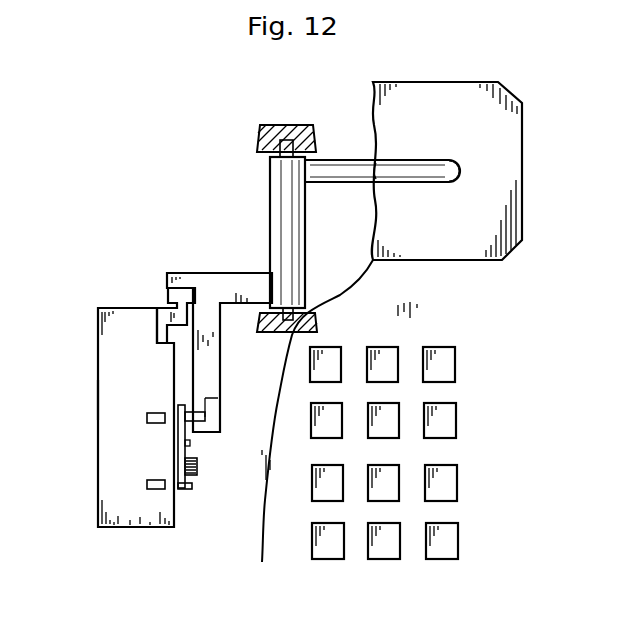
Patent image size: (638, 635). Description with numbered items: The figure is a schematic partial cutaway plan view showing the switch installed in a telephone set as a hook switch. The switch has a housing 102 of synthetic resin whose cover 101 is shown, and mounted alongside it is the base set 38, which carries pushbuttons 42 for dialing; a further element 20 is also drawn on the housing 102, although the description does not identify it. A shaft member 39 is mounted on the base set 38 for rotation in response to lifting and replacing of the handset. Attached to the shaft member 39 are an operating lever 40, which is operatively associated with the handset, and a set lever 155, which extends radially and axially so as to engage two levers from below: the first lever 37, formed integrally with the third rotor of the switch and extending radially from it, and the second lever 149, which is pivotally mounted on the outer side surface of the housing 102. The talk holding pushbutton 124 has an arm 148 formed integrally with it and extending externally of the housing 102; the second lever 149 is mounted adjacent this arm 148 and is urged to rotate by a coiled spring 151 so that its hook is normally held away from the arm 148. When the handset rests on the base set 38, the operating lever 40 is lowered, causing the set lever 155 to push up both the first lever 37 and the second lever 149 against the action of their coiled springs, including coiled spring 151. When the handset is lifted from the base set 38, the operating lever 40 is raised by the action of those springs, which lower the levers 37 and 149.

The cover 101 is at (114, 311).
The housing 102 is at (99, 402).
The element 20 is at (147, 418).
The talk holding pushbutton 124 is at (150, 490).
The first lever 37 is at (180, 298).
The set lever 155 is at (213, 281).
The arm 148 is at (190, 490).
The second lever 149 is at (192, 445).
The coiled spring 151 is at (198, 470).
The shaft member 39 is at (275, 222).
The operating lever 40 is at (430, 170).
The base set 38 is at (510, 217).
The pushbuttons 42 is at (469, 338).